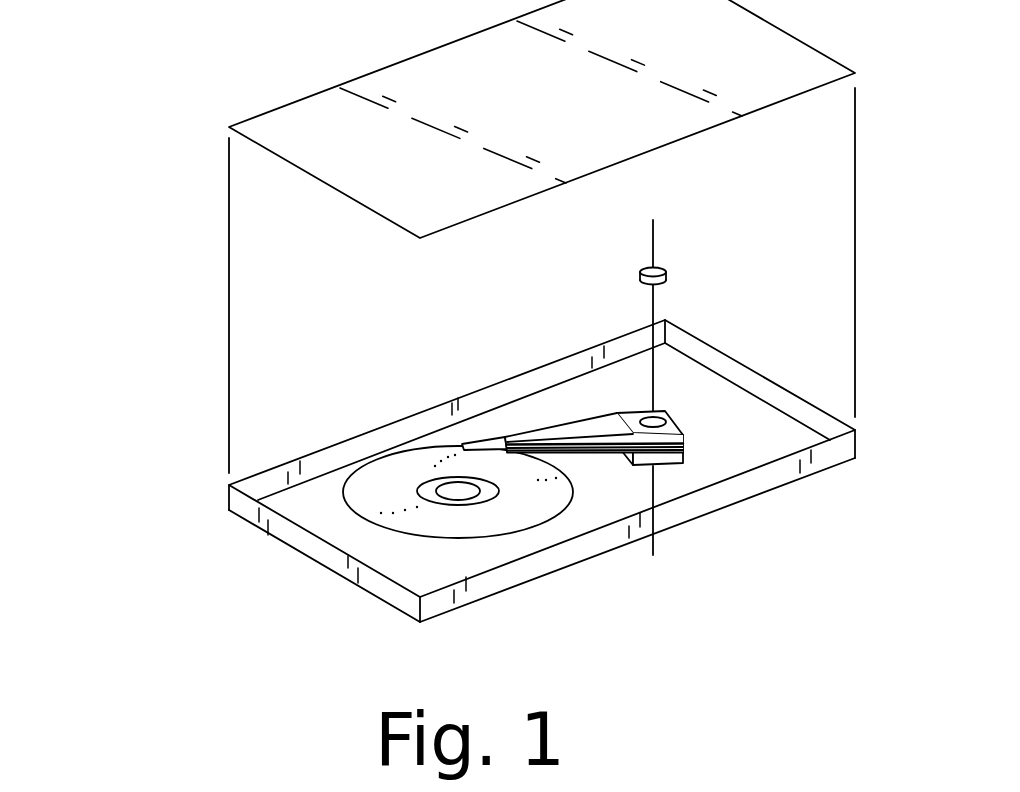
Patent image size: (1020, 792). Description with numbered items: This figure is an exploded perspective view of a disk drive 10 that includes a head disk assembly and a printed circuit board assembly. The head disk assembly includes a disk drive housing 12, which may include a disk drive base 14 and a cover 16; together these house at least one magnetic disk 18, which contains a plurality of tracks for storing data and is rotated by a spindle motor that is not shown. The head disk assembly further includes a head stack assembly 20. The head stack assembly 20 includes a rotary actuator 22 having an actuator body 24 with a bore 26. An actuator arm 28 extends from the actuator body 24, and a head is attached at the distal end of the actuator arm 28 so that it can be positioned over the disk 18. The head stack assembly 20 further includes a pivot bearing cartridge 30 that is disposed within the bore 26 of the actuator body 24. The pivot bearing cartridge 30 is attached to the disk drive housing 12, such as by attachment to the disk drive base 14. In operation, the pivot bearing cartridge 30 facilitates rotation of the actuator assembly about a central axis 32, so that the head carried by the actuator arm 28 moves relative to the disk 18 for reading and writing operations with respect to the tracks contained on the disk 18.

The disk drive 10 is at (158, 258).
The disk drive housing 12 is at (455, 288).
The disk drive base 14 is at (537, 370).
The cover 16 is at (453, 215).
The magnetic disk 18 is at (528, 508).
The head stack assembly 20 is at (688, 436).
The rotary actuator 22 is at (684, 420).
The actuator body 24 is at (660, 410).
The bore 26 is at (641, 399).
The actuator arm 28 is at (590, 421).
The pivot bearing cartridge 30 is at (667, 278).
The central axis 32 is at (653, 230).